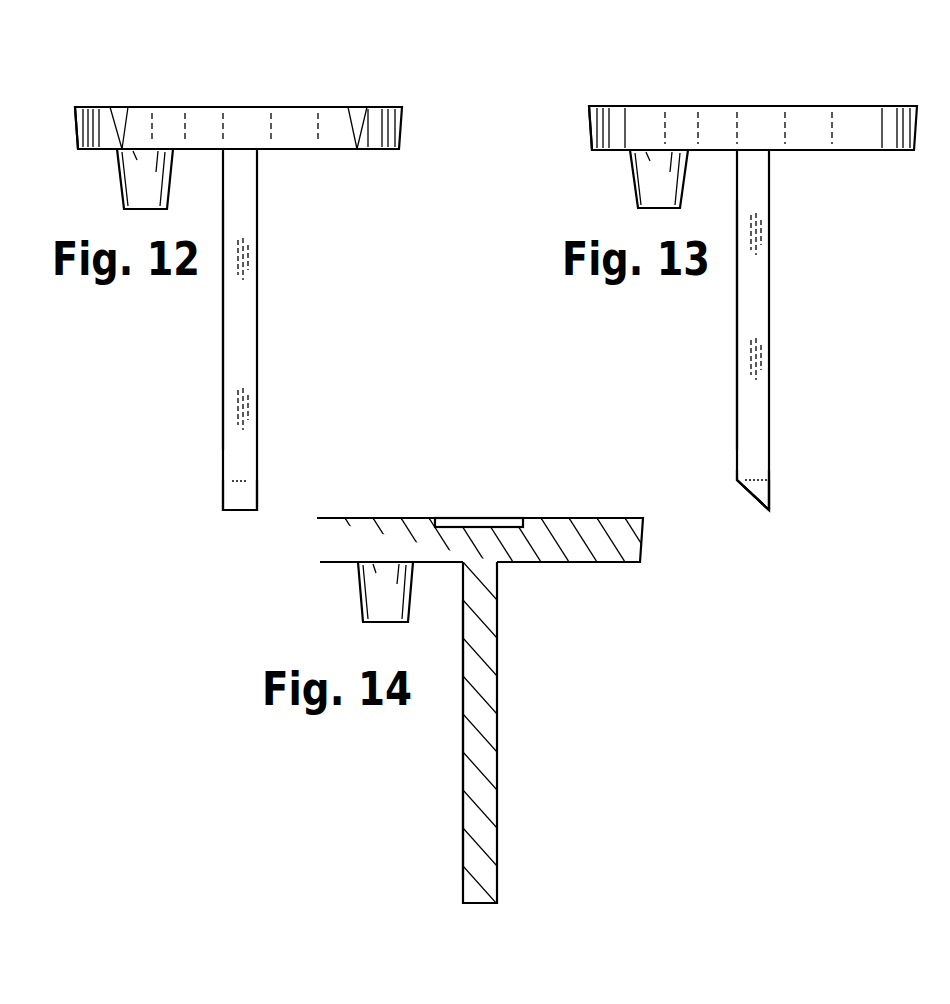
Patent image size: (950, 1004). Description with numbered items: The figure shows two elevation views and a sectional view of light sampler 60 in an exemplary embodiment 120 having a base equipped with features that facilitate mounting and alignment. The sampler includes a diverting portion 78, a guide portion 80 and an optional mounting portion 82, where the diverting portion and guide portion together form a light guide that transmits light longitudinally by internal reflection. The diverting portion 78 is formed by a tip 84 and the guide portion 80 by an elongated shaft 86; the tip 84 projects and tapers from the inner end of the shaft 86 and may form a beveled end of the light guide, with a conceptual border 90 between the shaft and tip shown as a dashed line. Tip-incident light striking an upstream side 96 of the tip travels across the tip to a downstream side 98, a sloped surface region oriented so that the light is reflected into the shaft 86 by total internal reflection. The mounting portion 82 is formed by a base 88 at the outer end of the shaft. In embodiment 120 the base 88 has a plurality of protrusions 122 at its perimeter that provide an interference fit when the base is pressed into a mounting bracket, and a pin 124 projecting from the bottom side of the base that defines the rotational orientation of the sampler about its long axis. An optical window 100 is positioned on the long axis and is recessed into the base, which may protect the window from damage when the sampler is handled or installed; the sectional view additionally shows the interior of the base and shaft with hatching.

In FIG. 12, the light sampler 60 is at (155, 47).
In FIG. 13, the light sampler 60 is at (663, 47).
In FIG. 14, the light sampler 60 is at (405, 461).
In FIG. 12, the exemplary embodiment of the light sampler 120 is at (156, 79).
In FIG. 13, the exemplary embodiment of the light sampler 120 is at (664, 79).
In FIG. 14, the exemplary embodiment of the light sampler 120 is at (407, 491).
In FIG. 12, the mounting portion 82 is at (73, 120).
In FIG. 13, the mounting portion 82 is at (586, 120).
In FIG. 14, the mounting portion 82 is at (480, 521).
In FIG. 12, the base 88 is at (78, 136).
In FIG. 13, the base 88 is at (591, 136).
In FIG. 12, the protrusions 122 is at (127, 116).
In FIG. 12, the pin 124 is at (118, 177).
In FIG. 13, the pin 124 is at (631, 177).
In FIG. 14, the pin 124 is at (385, 592).
In FIG. 12, the guide portion 80 is at (222, 330).
In FIG. 13, the guide portion 80 is at (736, 330).
In FIG. 14, the guide portion 80 is at (462, 745).
In FIG. 12, the shaft 86 is at (223, 344).
In FIG. 13, the shaft 86 is at (737, 344).
In FIG. 14, the shaft 86 is at (463, 757).
In FIG. 12, the diverting portion 78 is at (222, 490).
In FIG. 13, the diverting portion 78 is at (736, 493).
In FIG. 12, the tip 84 is at (223, 503).
In FIG. 13, the tip 84 is at (752, 496).
In FIG. 12, the conceptual border 90 is at (243, 482).
In FIG. 13, the conceptual border 90 is at (753, 480).
In FIG. 13, the upstream side 96 is at (770, 497).
In FIG. 13, the downstream side 98 is at (759, 502).
In FIG. 14, the optical window 100 is at (479, 518).